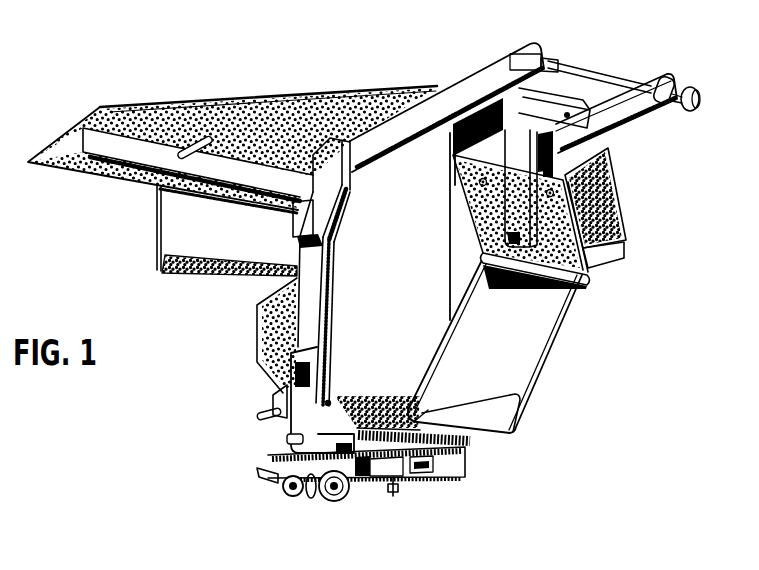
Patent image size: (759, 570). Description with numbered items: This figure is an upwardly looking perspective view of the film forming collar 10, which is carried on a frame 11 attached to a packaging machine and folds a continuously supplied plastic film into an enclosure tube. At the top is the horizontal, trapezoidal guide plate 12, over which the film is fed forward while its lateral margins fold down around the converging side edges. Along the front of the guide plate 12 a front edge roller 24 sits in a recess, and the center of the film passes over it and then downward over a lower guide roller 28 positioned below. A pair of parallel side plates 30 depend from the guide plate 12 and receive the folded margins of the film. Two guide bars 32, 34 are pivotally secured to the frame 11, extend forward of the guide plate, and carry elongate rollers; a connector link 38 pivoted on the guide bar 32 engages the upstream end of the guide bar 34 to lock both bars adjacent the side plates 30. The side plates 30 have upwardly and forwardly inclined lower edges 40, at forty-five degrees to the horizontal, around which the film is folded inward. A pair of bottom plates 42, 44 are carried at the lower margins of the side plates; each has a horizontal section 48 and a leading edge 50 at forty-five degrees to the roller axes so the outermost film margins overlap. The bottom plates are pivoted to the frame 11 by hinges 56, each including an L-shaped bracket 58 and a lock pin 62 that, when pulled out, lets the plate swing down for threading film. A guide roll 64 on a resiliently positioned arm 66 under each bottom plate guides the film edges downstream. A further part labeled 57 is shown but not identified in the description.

The film forming collar 10 is at (262, 62).
The frame 11 is at (212, 256).
The guide plate 12 is at (167, 118).
The front edge roller 24 is at (563, 98).
The lower guide roller 28 is at (590, 283).
The side plates 30 is at (360, 276).
The guide bar 32 is at (473, 102).
The guide bar 34 is at (653, 113).
The connector link 38 is at (627, 93).
The inclined lower edges 40 is at (460, 344).
The bottom plate 42 is at (383, 499).
The bottom plate 44 is at (455, 460).
The horizontal section 48 is at (423, 413).
The leading edges 50 is at (472, 431).
The hinges 56 is at (268, 402).
The bolt 57 is at (332, 399).
The bracket 58 is at (292, 424).
The lock pin 62 is at (276, 419).
The guide roll 64 is at (294, 502).
The resiliently positioned arm 66 is at (270, 484).